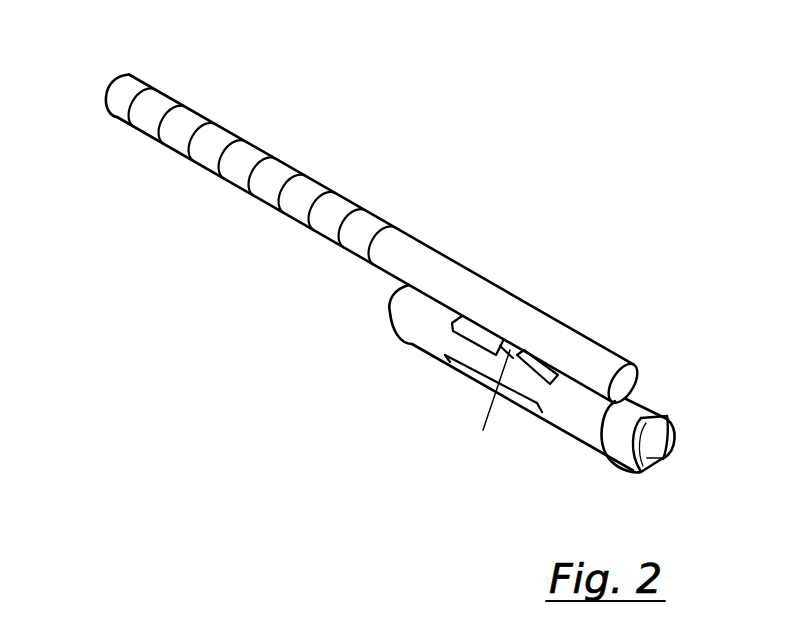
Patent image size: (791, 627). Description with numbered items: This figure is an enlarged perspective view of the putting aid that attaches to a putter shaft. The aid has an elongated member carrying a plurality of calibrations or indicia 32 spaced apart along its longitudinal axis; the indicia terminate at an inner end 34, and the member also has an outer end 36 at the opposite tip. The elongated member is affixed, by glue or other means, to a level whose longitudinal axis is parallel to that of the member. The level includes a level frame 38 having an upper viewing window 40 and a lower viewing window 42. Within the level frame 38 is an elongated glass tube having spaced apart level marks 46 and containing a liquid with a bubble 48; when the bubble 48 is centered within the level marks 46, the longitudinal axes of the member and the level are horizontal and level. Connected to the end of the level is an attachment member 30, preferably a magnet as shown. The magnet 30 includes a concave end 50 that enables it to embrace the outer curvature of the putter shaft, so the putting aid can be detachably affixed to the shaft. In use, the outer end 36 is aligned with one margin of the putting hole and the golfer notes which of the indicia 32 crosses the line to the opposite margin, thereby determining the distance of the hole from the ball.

The attachment member 30 is at (622, 456).
The indicia 32 is at (277, 159).
The inner end 34 is at (622, 388).
The outer end 36 is at (112, 86).
The level frame 38 is at (408, 332).
The upper viewing window 40 is at (476, 319).
The lower viewing window 42 is at (458, 372).
The level marks 46 is at (488, 338).
The bubble 48 is at (483, 430).
The concave end 50 is at (653, 447).